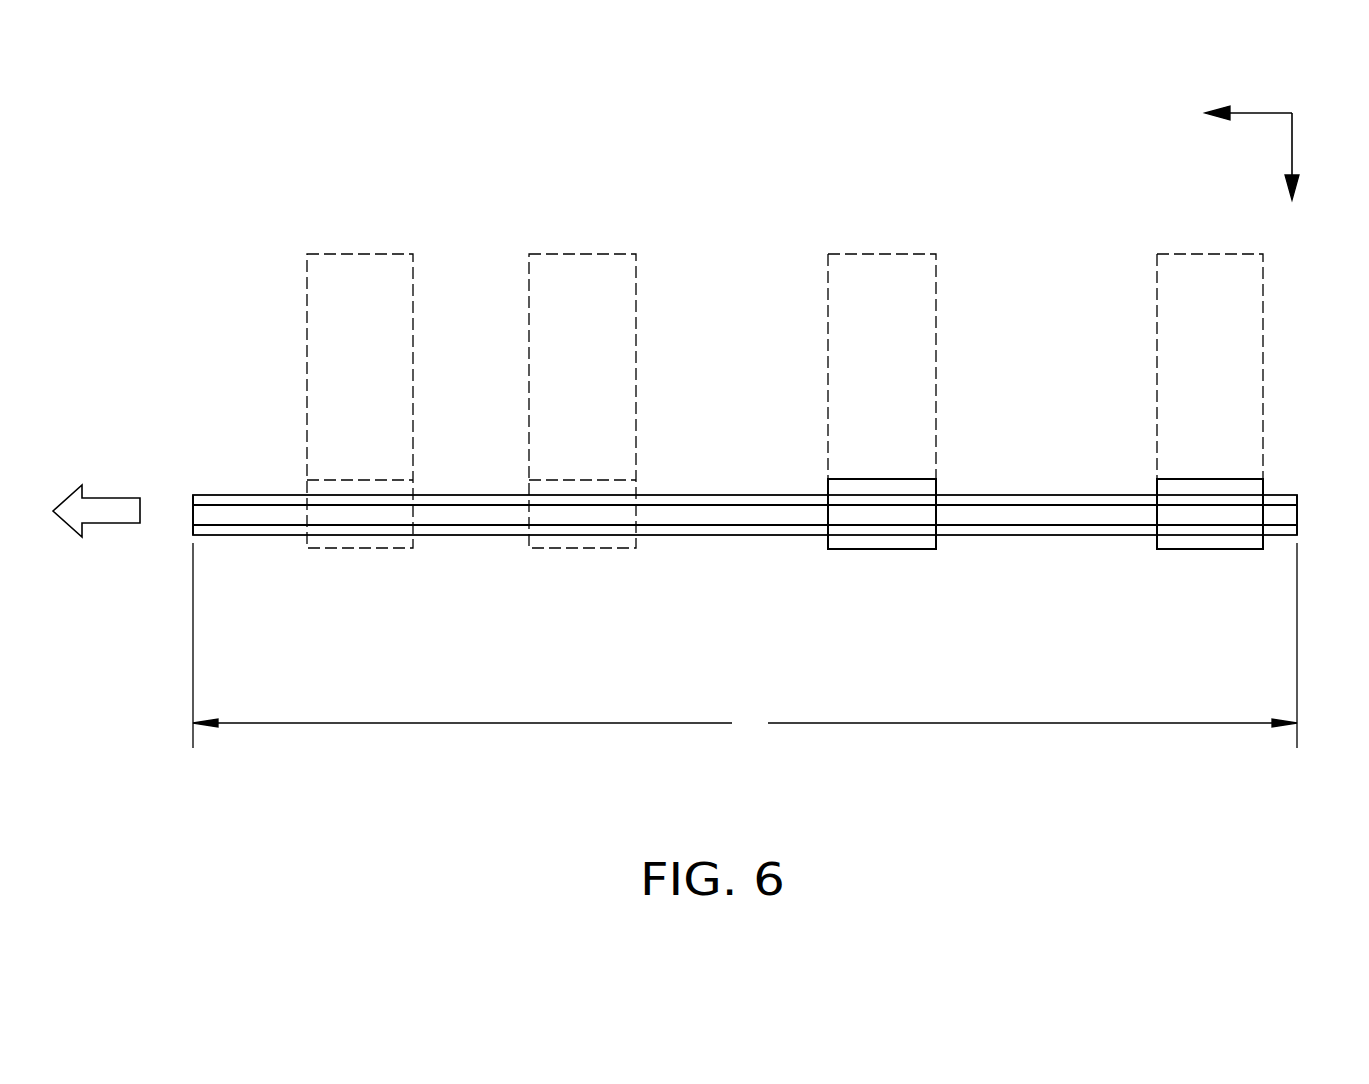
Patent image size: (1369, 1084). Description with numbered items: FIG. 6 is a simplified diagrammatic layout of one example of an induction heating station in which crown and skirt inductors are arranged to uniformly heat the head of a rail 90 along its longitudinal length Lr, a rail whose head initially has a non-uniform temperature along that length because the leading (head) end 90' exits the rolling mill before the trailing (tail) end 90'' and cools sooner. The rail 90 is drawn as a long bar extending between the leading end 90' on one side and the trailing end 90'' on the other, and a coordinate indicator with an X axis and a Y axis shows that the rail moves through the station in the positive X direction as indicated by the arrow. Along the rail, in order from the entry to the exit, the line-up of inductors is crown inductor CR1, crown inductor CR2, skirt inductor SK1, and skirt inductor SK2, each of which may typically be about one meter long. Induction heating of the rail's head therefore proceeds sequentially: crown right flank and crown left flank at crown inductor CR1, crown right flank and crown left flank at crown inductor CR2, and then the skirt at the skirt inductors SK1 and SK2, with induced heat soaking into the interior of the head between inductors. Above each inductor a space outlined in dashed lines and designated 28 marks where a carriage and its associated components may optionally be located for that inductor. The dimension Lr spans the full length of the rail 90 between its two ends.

The rail 90 is at (745, 492).
The leading (head) end of the rail 90' is at (1327, 497).
The trailing (tail) end of the rail 90'' is at (163, 497).
The space for carriage and associated components 28 is at (377, 366).
The skirt inductor SK1 is at (575, 543).
The skirt inductor SK2 is at (355, 543).
The crown inductor CR1 is at (1215, 543).
The crown inductor CR2 is at (883, 543).
The longitudinal length of the rail Lr is at (745, 645).
The X axis X is at (1239, 114).
The Y axis Y is at (1291, 175).